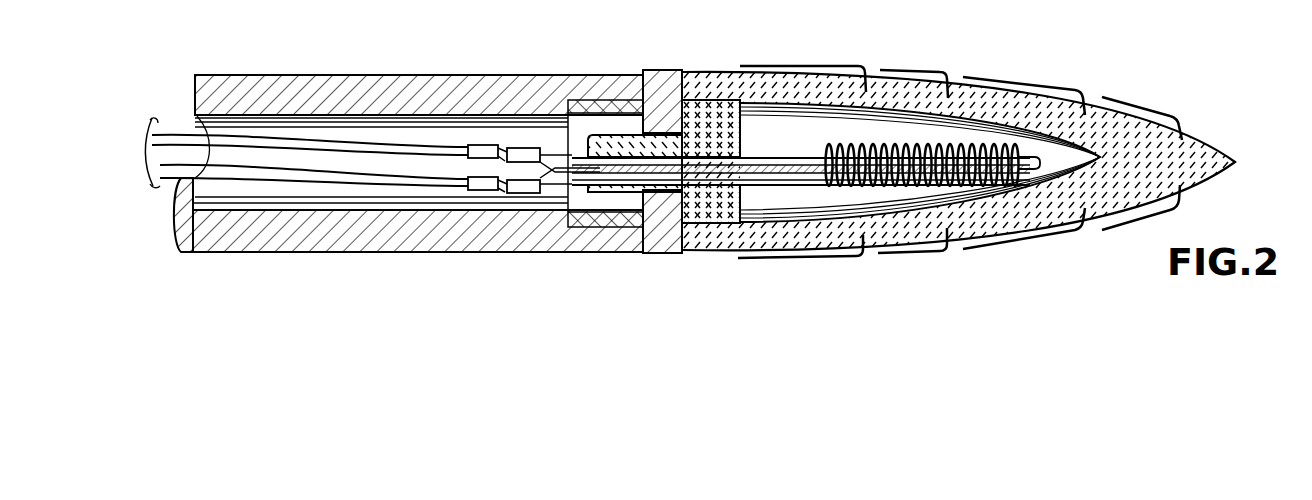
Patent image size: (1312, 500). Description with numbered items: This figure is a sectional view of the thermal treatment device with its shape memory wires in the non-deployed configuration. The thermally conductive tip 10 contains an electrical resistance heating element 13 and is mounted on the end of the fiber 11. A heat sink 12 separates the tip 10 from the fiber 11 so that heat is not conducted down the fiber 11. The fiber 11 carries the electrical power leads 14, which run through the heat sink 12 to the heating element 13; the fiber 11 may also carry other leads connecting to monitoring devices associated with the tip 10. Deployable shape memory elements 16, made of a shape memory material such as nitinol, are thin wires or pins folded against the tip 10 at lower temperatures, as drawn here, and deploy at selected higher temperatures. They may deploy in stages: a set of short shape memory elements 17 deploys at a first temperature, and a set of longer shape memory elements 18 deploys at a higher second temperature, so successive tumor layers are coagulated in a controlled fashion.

The thermally conductive tip 10 is at (1205, 122).
The fiber 11 is at (387, 90).
The heat sink 12 is at (659, 68).
The electrical resistance heating element 13 is at (965, 187).
The electrical power leads 14 is at (338, 147).
The shape memory elements 16 is at (936, 72).
The short shape memory elements 17 is at (1108, 98).
The longer shape memory elements 18 is at (998, 75).